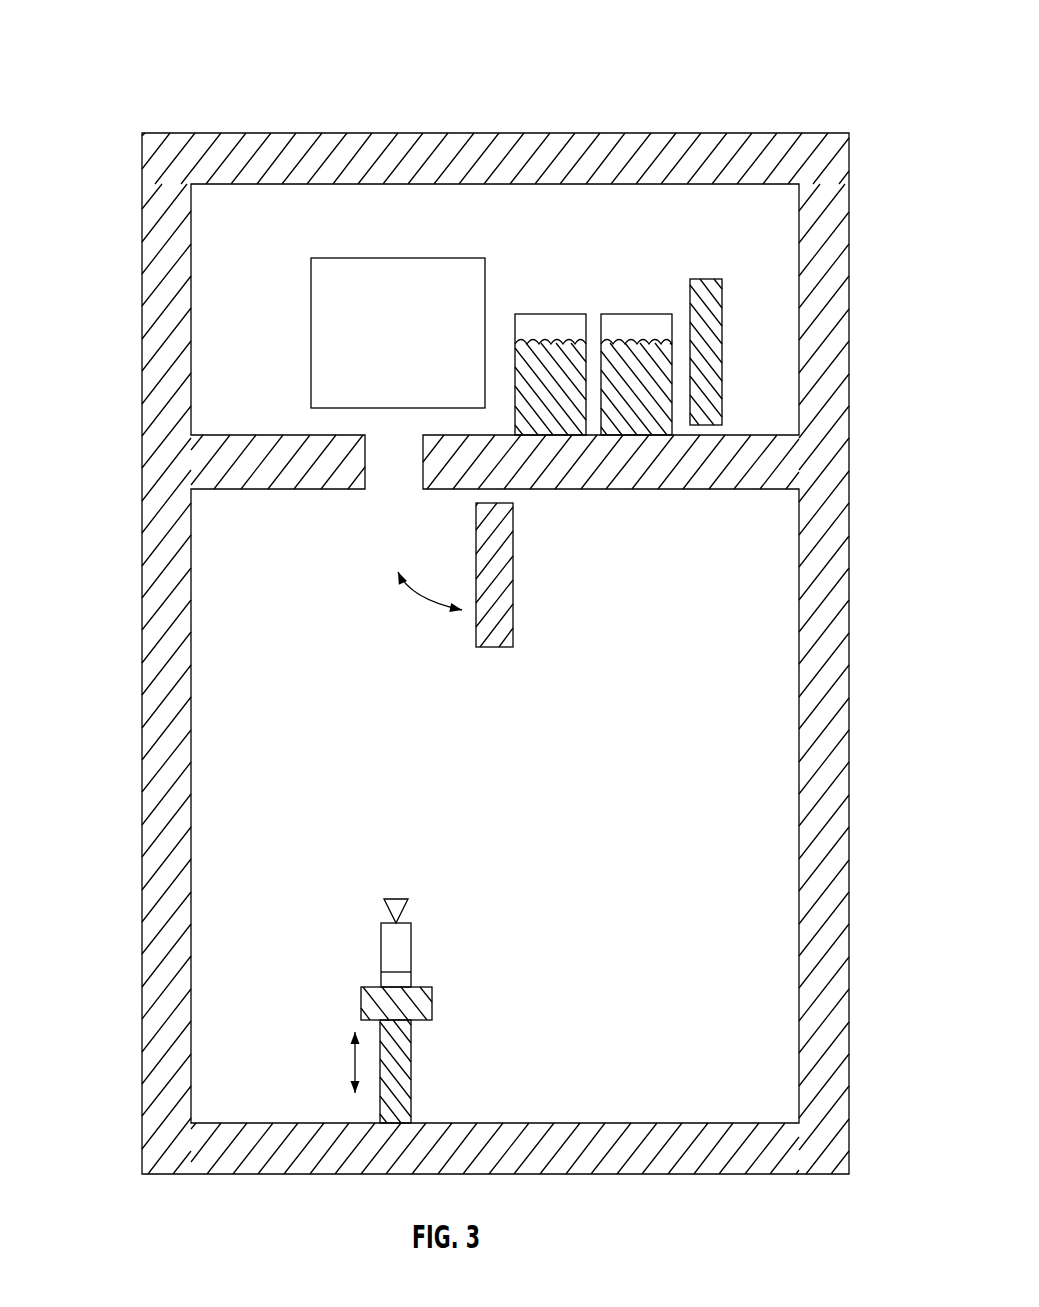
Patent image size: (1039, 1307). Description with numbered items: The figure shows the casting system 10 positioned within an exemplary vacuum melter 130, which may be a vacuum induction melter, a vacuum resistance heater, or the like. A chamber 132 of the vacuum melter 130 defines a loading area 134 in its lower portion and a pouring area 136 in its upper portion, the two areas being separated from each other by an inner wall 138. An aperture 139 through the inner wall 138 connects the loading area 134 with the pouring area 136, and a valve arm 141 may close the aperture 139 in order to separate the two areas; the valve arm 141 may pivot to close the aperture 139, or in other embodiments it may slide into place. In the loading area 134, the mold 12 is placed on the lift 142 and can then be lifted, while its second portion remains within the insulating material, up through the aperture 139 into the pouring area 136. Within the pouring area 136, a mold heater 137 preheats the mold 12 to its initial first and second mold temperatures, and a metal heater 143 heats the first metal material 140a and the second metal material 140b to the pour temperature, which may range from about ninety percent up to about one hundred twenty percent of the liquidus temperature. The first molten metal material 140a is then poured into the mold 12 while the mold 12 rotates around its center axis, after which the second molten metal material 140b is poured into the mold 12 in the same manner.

The vacuum melter 130 is at (181, 85).
The chamber 132 is at (613, 222).
The loading area 134 is at (738, 695).
The pouring area 136 is at (762, 235).
The mold heater 137 is at (311, 340).
The inner wall 138 is at (753, 450).
The aperture 139 is at (384, 497).
The first metal material 140a is at (547, 373).
The second metal material 140b is at (645, 388).
The valve arm 141 is at (513, 600).
The lift 142 is at (412, 1088).
The metal heater 143 is at (722, 315).
The casting system 10 is at (396, 929).
The mold 12 is at (412, 957).